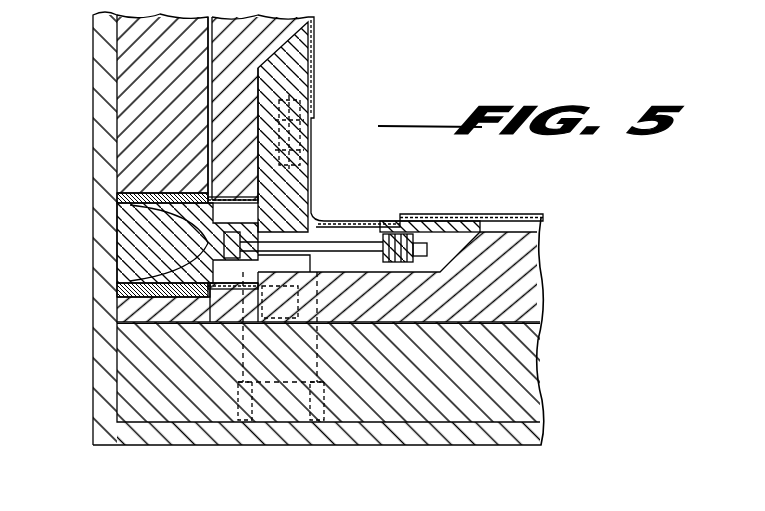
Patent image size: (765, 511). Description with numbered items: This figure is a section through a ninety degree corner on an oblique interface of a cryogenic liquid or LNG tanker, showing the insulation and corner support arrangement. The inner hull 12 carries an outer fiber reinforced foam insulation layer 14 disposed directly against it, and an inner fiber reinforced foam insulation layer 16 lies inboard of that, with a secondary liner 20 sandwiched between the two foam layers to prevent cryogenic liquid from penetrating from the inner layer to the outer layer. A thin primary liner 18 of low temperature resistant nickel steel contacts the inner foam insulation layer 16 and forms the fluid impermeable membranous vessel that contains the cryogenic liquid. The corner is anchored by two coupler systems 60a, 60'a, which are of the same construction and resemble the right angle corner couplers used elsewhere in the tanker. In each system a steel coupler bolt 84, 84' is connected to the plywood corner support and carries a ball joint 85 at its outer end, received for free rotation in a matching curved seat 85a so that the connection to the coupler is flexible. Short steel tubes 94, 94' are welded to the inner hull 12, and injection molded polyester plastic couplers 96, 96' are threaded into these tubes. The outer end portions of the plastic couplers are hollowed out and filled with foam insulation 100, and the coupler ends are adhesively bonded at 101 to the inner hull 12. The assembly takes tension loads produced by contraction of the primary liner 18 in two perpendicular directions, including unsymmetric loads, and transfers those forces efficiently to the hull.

The inner hull 12 is at (93, 372).
The outer fiber reinforced foam insulation layer 14 is at (446, 415).
The inner fiber reinforced foam insulation layer 16 is at (538, 281).
The primary liner 18 is at (318, 22).
The secondary liner 20 is at (525, 319).
The coupler system 60a is at (396, 212).
The coupler system 60'a is at (327, 127).
The coupler bolt 84 is at (325, 226).
The coupler bolt 84' is at (330, 134).
The ball joint 85 is at (258, 306).
The seat 85a is at (232, 200).
The steel tube 94 is at (149, 297).
The steel tube 94' is at (250, 437).
The plastic coupler 96 is at (164, 107).
The plastic coupler 96' is at (251, 328).
The foam insulation 100 is at (118, 244).
The adhesive bond 101 is at (118, 198).